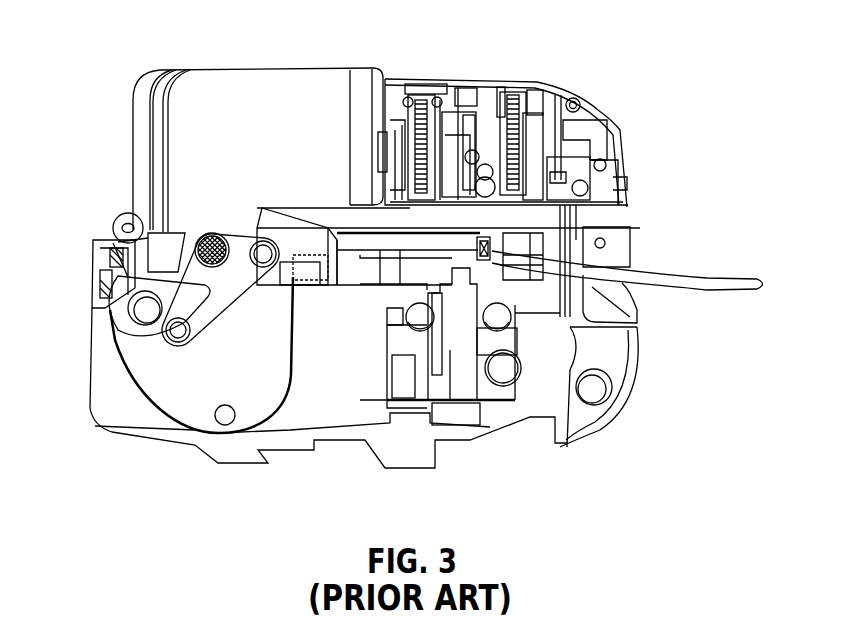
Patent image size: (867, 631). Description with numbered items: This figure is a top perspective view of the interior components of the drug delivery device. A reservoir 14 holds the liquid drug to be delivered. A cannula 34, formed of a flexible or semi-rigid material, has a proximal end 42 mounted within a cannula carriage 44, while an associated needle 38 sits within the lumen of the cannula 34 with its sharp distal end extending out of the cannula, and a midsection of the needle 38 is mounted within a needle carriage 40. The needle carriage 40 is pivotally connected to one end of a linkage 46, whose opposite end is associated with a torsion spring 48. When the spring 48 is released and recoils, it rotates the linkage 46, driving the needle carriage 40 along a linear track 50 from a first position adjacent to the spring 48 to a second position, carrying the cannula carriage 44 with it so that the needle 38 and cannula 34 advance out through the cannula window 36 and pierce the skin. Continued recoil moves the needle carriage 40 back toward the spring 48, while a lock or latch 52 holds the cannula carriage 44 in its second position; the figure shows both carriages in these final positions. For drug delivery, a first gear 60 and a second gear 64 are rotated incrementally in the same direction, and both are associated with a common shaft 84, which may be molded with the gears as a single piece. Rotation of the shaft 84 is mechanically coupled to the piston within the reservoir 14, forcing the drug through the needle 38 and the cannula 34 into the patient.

The reservoir 14 is at (223, 100).
The needle carriage 40 is at (298, 240).
The first gear 60 is at (421, 108).
The shaft 84 is at (482, 140).
The second gear 64 is at (513, 112).
The torsion spring 48 is at (202, 236).
The linkage 46 is at (183, 284).
The cannula carriage 44 is at (500, 234).
The cannula 34 is at (723, 277).
The cannula window 36 is at (615, 311).
The needle 38 is at (275, 400).
The linear track 50 is at (427, 287).
The lock or latch 52 is at (455, 372).
The proximal end of the cannula 42 is at (483, 252).